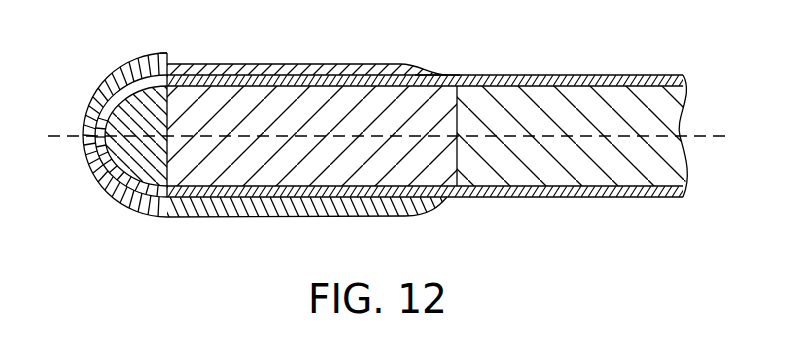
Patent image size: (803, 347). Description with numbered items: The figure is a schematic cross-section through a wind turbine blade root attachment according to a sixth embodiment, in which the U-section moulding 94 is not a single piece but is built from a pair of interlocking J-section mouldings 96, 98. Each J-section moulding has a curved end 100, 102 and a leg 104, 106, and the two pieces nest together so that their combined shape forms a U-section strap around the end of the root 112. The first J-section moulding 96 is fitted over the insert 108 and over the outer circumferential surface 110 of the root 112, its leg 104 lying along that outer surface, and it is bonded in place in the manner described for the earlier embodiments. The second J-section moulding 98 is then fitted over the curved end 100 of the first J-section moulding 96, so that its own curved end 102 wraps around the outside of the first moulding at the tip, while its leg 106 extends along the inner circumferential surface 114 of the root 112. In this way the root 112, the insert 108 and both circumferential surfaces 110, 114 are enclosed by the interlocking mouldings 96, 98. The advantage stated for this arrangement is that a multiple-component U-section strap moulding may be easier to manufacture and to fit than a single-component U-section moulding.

The U-section moulding 94 is at (89, 104).
The first J-section moulding 96 is at (289, 77).
The second J-section moulding 98 is at (226, 208).
The curved end 100 is at (115, 74).
The curved end 102 is at (92, 164).
The leg 104 is at (223, 70).
The leg 106 is at (381, 216).
The insert 108 is at (151, 55).
The outer circumferential surface 110 is at (428, 82).
The root 112 is at (376, 94).
The inner circumferential surface 114 is at (485, 198).